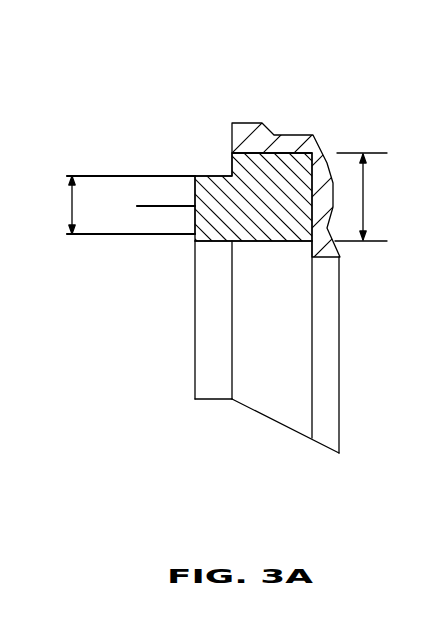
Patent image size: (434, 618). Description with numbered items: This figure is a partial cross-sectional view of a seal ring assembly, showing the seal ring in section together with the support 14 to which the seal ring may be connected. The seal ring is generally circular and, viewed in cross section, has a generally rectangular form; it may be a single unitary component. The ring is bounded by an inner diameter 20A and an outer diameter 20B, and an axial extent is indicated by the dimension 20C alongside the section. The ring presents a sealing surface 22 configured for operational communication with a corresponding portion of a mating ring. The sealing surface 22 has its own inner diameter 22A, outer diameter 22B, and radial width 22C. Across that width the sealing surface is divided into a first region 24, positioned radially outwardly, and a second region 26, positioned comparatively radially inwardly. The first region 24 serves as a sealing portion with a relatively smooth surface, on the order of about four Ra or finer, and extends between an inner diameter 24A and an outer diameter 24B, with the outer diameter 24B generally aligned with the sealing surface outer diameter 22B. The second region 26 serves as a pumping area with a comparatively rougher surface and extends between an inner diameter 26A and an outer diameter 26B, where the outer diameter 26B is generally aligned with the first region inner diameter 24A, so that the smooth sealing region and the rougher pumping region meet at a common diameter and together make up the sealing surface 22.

The support 14 is at (290, 112).
The inner diameter 20A is at (228, 244).
The outer diameter 20B is at (232, 153).
The height of flange 20C is at (367, 210).
The sealing surface 22 is at (195, 176).
The inner diameter 22A is at (178, 236).
The outer diameter 22B is at (187, 176).
The radial width 22C is at (72, 203).
The first region 24 is at (186, 189).
The inner diameter 24A is at (158, 207).
The outer diameter 24B is at (131, 118).
The second region 26 is at (183, 215).
The inner diameter 26A is at (131, 298).
The outer diameter 26B is at (132, 241).